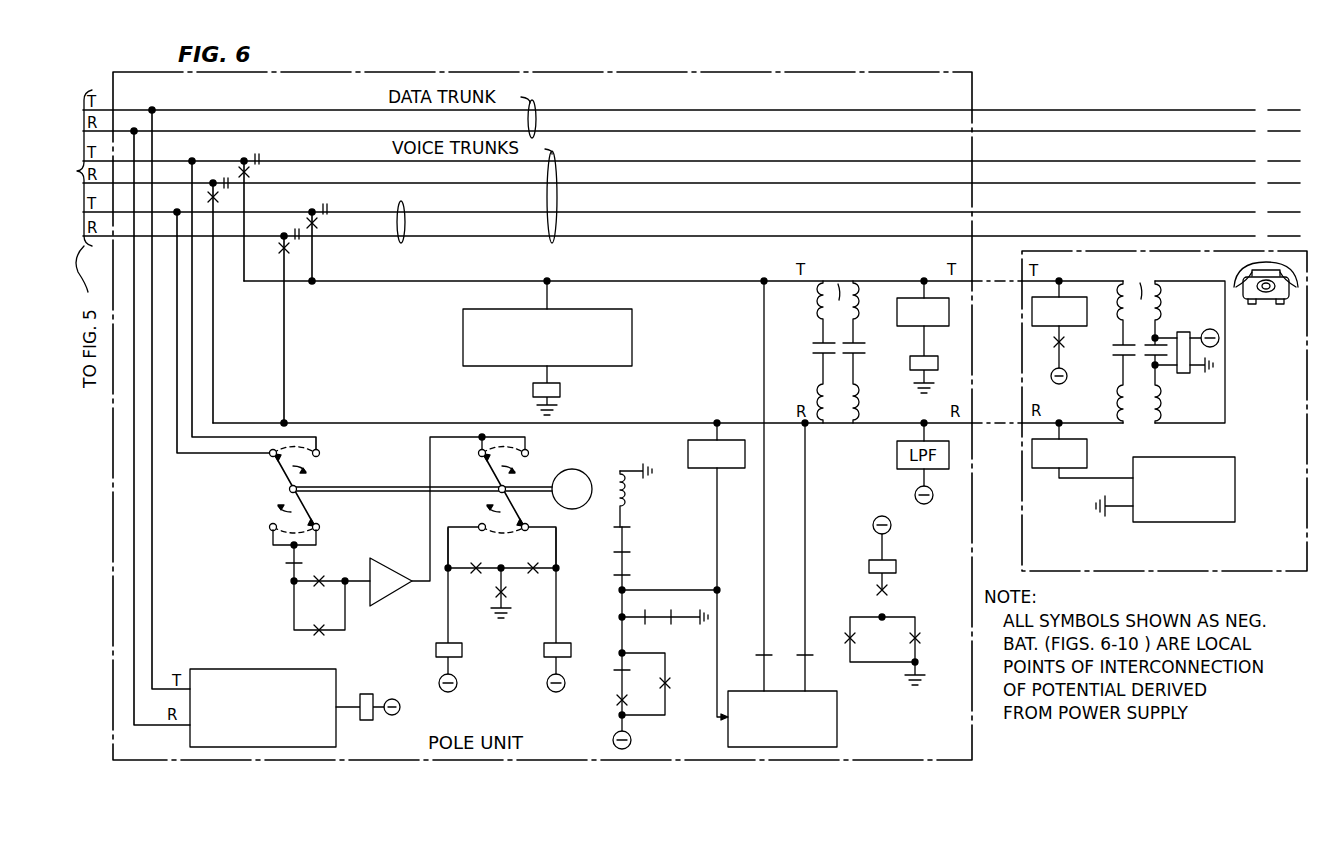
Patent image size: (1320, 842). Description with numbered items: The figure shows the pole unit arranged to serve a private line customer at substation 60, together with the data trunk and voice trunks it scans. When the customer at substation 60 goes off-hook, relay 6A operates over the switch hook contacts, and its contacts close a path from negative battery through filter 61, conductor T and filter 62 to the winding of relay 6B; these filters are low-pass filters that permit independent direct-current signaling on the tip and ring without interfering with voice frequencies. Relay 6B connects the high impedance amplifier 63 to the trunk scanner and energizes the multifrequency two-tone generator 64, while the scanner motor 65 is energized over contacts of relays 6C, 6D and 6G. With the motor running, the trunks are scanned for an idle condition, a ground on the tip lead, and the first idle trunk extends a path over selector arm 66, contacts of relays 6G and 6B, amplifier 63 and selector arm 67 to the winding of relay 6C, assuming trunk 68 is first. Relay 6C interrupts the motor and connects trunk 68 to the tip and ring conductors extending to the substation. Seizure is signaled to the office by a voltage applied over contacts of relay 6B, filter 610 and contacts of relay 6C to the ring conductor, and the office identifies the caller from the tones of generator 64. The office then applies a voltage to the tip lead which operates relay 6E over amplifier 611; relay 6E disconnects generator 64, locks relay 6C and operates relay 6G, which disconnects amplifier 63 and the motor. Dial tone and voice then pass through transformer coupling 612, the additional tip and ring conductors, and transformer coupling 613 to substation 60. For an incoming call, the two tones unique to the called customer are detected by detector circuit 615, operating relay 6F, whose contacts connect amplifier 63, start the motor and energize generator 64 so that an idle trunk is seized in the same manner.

The substation 60 is at (1291, 251).
The filter 61 is at (1032, 303).
The filter 62 is at (930, 326).
The high impedance amplifier 63 is at (385, 571).
The multifrequency 2-tone generator 64 is at (837, 721).
The scanner motor 65 is at (578, 460).
The selector arm 66 is at (285, 478).
The selector arm 67 is at (493, 485).
The trunk 68 is at (400, 203).
The filter 610 is at (688, 453).
The amplifier 611 is at (632, 321).
The transformer coupling 612 is at (852, 273).
The transformer coupling 613 is at (1152, 273).
The detector circuit 615 is at (250, 669).
The relay 6A is at (1180, 385).
The relay 6B is at (614, 510).
The relay 6C is at (318, 210).
The relay 6D is at (252, 158).
The relay 6E is at (560, 390).
The relay 6F is at (679, 636).
The relay 6G is at (287, 564).